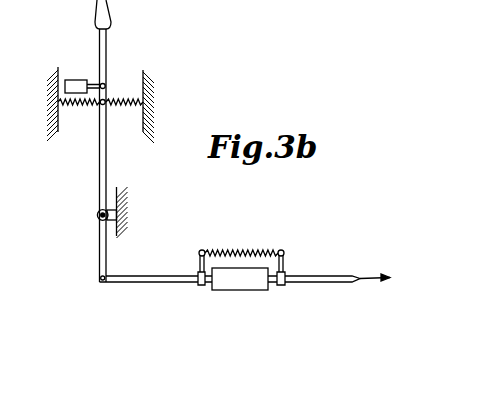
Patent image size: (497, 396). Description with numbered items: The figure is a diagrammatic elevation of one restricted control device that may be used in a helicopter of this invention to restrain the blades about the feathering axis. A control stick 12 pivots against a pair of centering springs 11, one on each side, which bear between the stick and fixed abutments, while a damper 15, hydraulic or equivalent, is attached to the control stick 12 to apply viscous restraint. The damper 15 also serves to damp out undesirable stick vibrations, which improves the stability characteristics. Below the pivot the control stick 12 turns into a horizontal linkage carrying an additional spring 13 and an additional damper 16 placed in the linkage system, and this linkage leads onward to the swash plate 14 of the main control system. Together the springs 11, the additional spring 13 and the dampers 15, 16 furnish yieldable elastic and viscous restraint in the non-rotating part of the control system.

The springs 11 is at (80, 107).
The control stick 12 is at (107, 48).
The additional spring 13 is at (248, 250).
The swash plate 14 is at (322, 280).
The damper 15 is at (73, 80).
The damper 16 is at (242, 292).